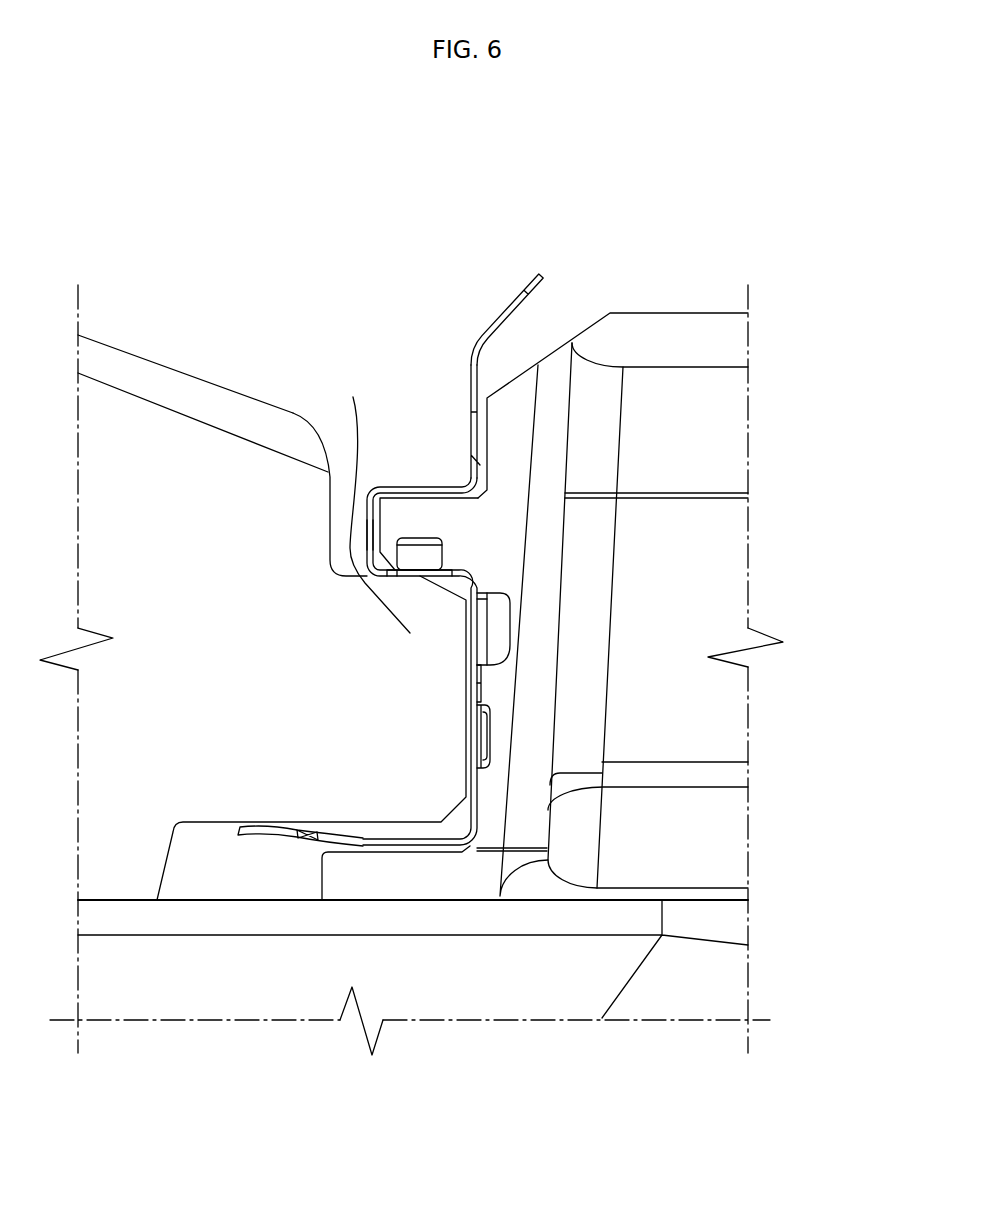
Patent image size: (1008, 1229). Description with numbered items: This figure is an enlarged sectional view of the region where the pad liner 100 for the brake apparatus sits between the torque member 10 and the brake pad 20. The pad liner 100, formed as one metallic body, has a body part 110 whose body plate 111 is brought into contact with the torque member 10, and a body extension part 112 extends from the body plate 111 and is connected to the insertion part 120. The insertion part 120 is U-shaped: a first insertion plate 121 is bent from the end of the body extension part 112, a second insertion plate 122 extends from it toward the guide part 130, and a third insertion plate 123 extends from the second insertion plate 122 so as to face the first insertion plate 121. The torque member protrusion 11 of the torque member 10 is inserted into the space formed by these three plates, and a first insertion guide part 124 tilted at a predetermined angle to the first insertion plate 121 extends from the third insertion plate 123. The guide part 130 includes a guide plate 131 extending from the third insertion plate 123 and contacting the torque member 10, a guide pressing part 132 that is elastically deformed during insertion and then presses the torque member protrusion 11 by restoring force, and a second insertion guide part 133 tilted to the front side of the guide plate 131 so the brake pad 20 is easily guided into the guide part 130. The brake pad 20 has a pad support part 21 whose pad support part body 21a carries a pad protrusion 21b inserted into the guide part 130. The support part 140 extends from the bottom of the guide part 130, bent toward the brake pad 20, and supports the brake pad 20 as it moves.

The torque member 10 is at (690, 395).
The torque member protrusion 11 is at (417, 498).
The brake pad 20 is at (272, 597).
The pad support part 21 is at (290, 295).
The pad support part body 21a is at (230, 462).
The pad protrusion 21b is at (372, 499).
The pad liner 100 is at (549, 258).
The body part 110 is at (515, 300).
The body plate 111 is at (495, 320).
The body extension part 112 is at (477, 460).
The insertion part 120 is at (823, 505).
The first insertion plate 121 is at (438, 493).
The second insertion plate 122 is at (428, 558).
The third insertion plate 123 is at (510, 603).
The first insertion guide part 124 is at (365, 535).
The guide part 130 is at (823, 675).
The guide plate 131 is at (478, 685).
The guide pressing part 132 is at (500, 642).
The second insertion guide part 133 is at (478, 737).
The support part 140 is at (408, 845).